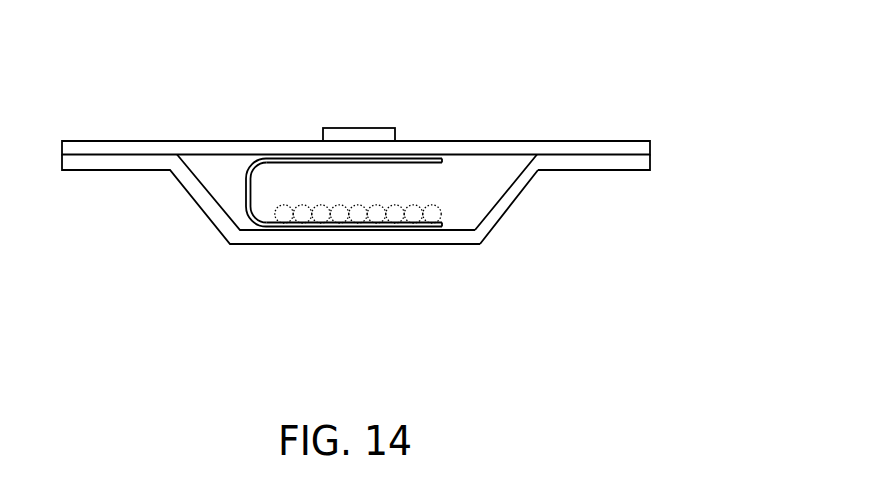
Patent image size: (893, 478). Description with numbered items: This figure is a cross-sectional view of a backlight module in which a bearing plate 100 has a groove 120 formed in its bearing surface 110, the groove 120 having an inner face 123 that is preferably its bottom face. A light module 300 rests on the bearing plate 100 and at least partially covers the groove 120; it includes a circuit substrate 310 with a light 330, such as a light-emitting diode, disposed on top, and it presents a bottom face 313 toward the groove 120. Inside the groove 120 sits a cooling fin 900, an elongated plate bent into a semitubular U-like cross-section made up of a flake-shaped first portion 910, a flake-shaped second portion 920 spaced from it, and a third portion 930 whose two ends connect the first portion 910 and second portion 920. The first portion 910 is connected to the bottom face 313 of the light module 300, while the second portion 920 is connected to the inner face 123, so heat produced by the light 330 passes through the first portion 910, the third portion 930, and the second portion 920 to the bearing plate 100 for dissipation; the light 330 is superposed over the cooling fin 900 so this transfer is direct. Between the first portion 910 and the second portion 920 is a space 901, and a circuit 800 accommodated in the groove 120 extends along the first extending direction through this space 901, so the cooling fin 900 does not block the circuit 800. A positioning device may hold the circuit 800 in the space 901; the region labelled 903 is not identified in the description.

The bearing plate 100 is at (397, 195).
The bearing surface 110 is at (622, 153).
The groove 120 is at (473, 192).
The inner face 123 is at (512, 210).
The bottom face 313 is at (224, 158).
The light module 300 is at (350, 79).
The circuit substrate 310 is at (283, 152).
The light 330 is at (348, 137).
The cooling fin 900 is at (312, 266).
The first portion 910 is at (320, 163).
The second portion 920 is at (385, 228).
The third portion 930 is at (224, 237).
The circuit 800 is at (433, 222).
The space 901 is at (420, 183).
The gap 903 is at (245, 192).